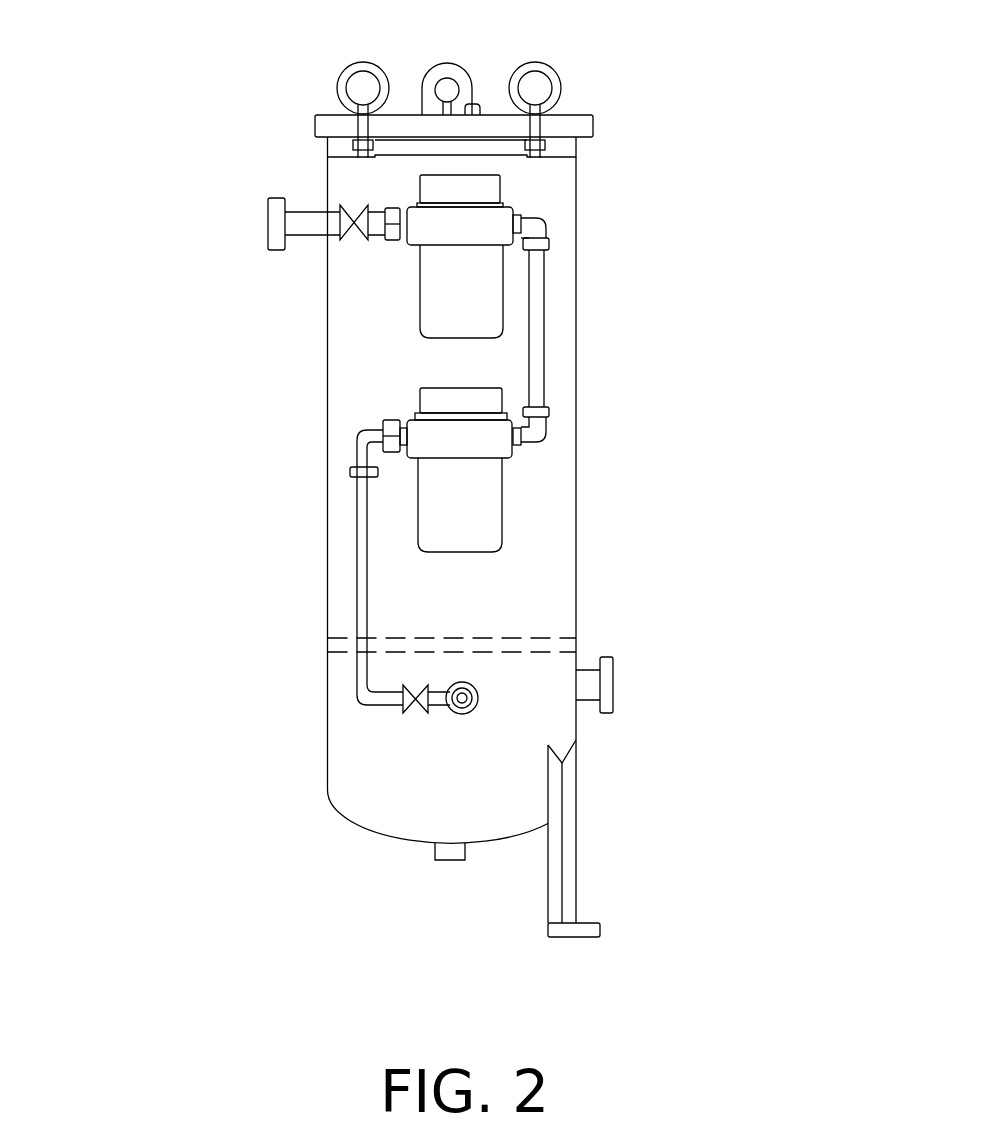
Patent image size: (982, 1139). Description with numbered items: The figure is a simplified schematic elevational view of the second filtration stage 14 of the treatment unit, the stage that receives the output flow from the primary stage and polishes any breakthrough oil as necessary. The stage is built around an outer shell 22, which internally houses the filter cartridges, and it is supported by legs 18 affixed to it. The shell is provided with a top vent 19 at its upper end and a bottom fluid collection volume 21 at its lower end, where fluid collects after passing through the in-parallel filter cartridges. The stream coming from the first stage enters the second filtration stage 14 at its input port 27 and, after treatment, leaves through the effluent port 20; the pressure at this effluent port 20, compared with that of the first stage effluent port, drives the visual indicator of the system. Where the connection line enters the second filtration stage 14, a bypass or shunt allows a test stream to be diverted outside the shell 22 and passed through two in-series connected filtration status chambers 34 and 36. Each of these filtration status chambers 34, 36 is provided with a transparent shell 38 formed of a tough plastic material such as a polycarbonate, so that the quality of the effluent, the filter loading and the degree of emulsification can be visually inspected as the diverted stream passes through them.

The second filtration stage 14 is at (290, 570).
The legs 18 is at (596, 846).
The top vent 19 is at (481, 96).
The effluent port 20 is at (614, 683).
The bottom fluid collection volume 21 is at (405, 728).
The outer shell 22 is at (586, 550).
The input port 27 is at (258, 226).
The filtration status chamber 34 is at (442, 290).
The filtration status chamber 36 is at (438, 492).
The transparent shell 38 is at (503, 289).